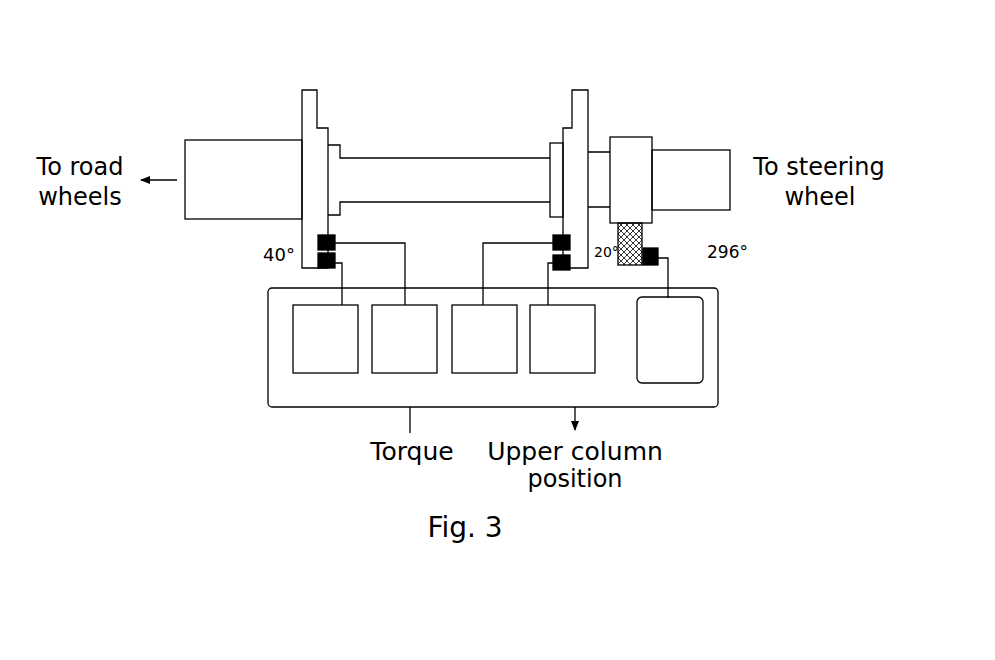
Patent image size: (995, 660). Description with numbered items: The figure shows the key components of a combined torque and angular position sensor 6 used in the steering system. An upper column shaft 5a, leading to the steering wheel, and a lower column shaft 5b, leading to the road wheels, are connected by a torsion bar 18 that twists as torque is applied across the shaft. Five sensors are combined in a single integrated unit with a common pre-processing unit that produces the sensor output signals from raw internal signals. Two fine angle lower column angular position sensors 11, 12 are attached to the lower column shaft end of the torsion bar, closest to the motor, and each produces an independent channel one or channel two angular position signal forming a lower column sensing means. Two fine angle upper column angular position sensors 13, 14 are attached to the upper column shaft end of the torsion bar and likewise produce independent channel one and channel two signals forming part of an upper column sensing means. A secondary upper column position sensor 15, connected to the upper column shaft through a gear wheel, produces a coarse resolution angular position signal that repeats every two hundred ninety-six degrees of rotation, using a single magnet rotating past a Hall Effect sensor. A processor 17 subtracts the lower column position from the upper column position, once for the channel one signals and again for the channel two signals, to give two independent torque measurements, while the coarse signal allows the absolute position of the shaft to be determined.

The upper column shaft 5a is at (686, 150).
The lower column shaft 5b is at (243, 139).
The combined torque and angular position sensor 6 is at (295, 63).
The torsion bar 18 is at (442, 157).
The fine angle lower column angular position sensor 11 is at (335, 239).
The fine angle lower column angular position sensor 12 is at (335, 261).
The fine angle upper column angular position sensor 13 is at (553, 242).
The fine angle upper column angular position sensor 14 is at (553, 262).
The secondary upper column position sensor 15 is at (656, 252).
The processor 17 is at (718, 350).